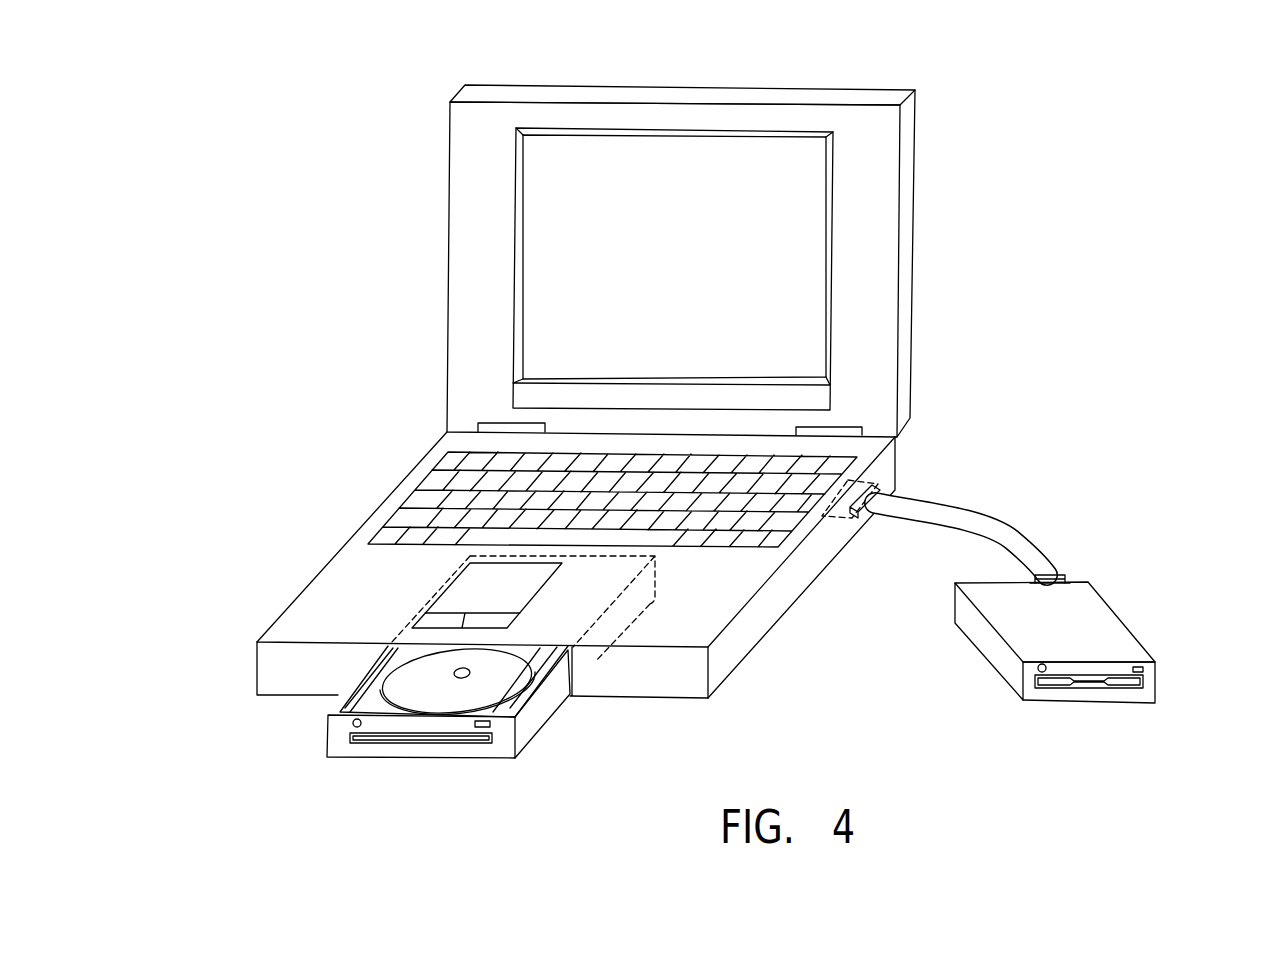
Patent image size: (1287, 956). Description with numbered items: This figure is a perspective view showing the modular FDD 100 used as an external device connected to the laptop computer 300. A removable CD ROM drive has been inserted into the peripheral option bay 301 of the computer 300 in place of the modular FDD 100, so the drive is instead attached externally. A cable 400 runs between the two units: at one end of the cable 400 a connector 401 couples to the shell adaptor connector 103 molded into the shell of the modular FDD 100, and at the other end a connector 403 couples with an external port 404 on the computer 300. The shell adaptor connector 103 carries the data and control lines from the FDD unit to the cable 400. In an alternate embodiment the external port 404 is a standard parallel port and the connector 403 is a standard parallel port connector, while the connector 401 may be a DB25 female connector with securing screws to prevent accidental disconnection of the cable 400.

The laptop computer 300 is at (438, 245).
The peripheral option bay 301 is at (595, 662).
The cable 400 is at (972, 512).
The connector 401 is at (1063, 573).
The connector 403 is at (862, 518).
The external port 404 is at (838, 520).
The shell adaptor connector 103 is at (1073, 580).
The modular FDD 100 is at (1150, 643).